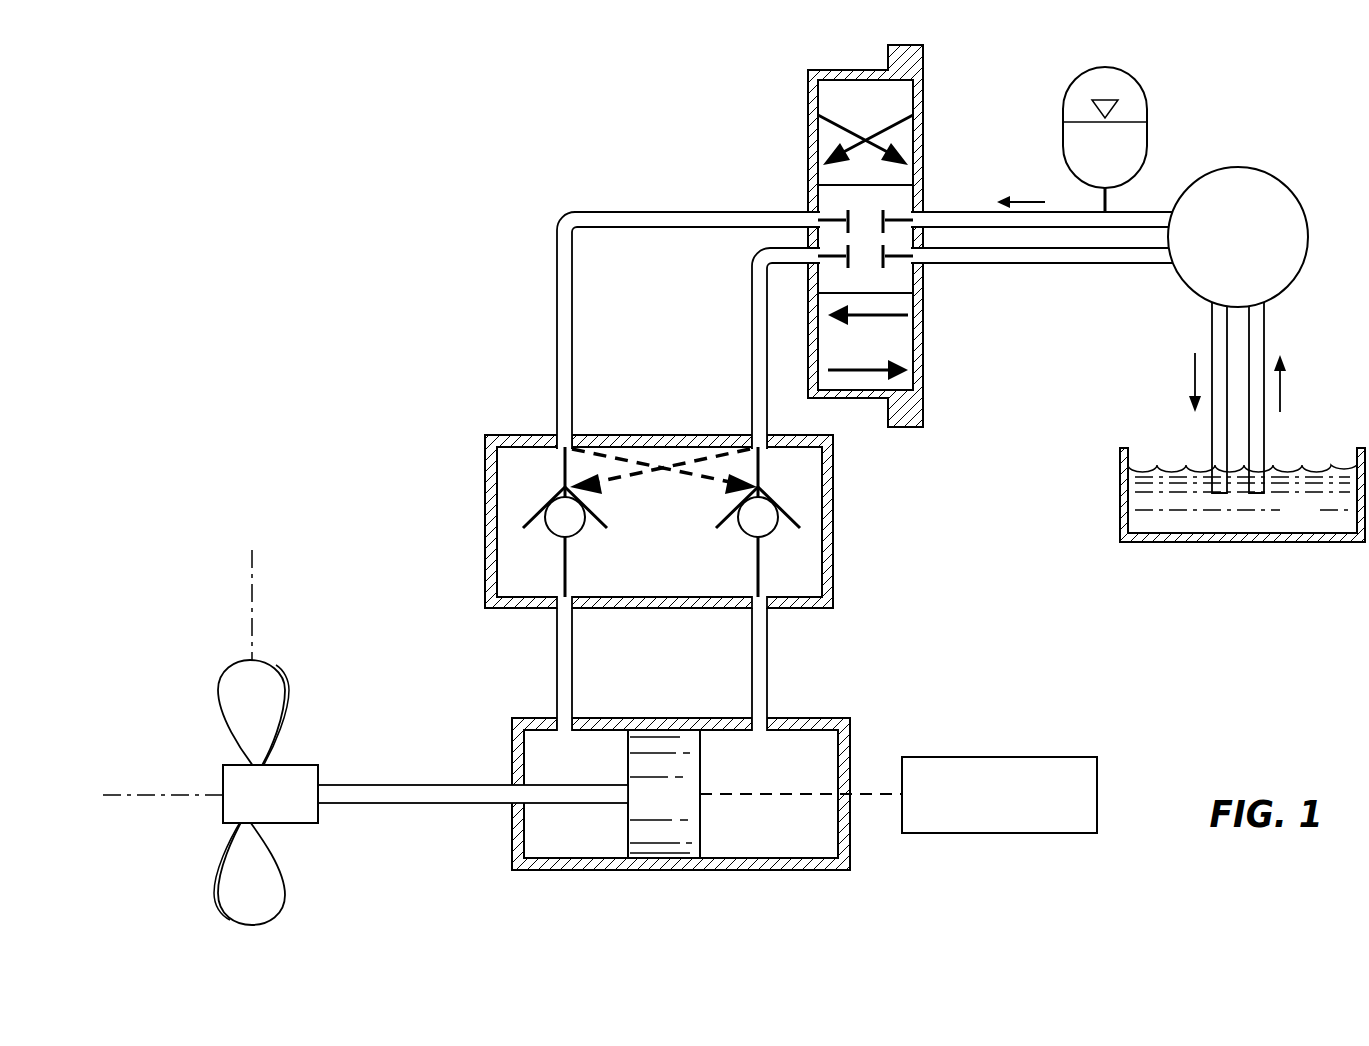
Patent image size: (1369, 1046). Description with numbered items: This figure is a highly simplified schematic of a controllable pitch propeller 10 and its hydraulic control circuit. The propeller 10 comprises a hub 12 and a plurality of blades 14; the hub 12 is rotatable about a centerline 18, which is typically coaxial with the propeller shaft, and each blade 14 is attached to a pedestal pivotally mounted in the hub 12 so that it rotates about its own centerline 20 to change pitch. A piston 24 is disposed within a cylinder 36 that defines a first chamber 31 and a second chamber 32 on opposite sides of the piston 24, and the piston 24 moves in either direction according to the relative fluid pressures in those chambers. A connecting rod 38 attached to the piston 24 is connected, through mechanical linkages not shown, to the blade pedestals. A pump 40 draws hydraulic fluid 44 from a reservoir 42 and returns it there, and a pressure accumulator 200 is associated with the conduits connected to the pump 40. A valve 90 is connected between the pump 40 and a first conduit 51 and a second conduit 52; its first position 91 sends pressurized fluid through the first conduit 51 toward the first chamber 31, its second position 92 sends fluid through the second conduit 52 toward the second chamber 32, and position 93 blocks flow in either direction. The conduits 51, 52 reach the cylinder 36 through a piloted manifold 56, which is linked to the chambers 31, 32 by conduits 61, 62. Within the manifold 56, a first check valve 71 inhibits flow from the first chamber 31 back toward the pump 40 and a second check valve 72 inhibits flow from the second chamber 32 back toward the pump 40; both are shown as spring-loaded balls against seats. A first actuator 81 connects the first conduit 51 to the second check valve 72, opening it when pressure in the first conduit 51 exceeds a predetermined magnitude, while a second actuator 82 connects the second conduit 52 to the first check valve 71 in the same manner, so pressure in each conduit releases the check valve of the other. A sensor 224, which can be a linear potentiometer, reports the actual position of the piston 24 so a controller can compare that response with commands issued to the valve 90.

The controllable pitch propeller 10 is at (308, 735).
The hub 12 is at (300, 815).
The blades 14 is at (225, 702).
The centerline 18 is at (143, 797).
The centerline 20 is at (255, 592).
The piston 24 is at (668, 847).
The first chamber 31 is at (565, 847).
The second chamber 32 is at (822, 845).
The cylinder 36 is at (760, 870).
The connecting rod 38 is at (432, 785).
The pump 40 is at (1268, 190).
The reservoir 42 is at (1120, 505).
The hydraulic fluid 44 is at (1284, 526).
The first conduit 51 is at (572, 322).
The second conduit 52 is at (752, 300).
The piloted manifold 56 is at (485, 478).
The conduit 61 is at (573, 668).
The conduit 62 is at (768, 663).
The first check valve 71 is at (556, 523).
The second check valve 72 is at (767, 527).
The first actuator 81 is at (630, 458).
The second actuator 82 is at (690, 458).
The valve 90 is at (938, 120).
The first position 91 is at (900, 340).
The second position 92 is at (848, 110).
The position 93 is at (898, 200).
The pressure accumulator 200 is at (1147, 137).
The sensor 224 is at (1012, 833).